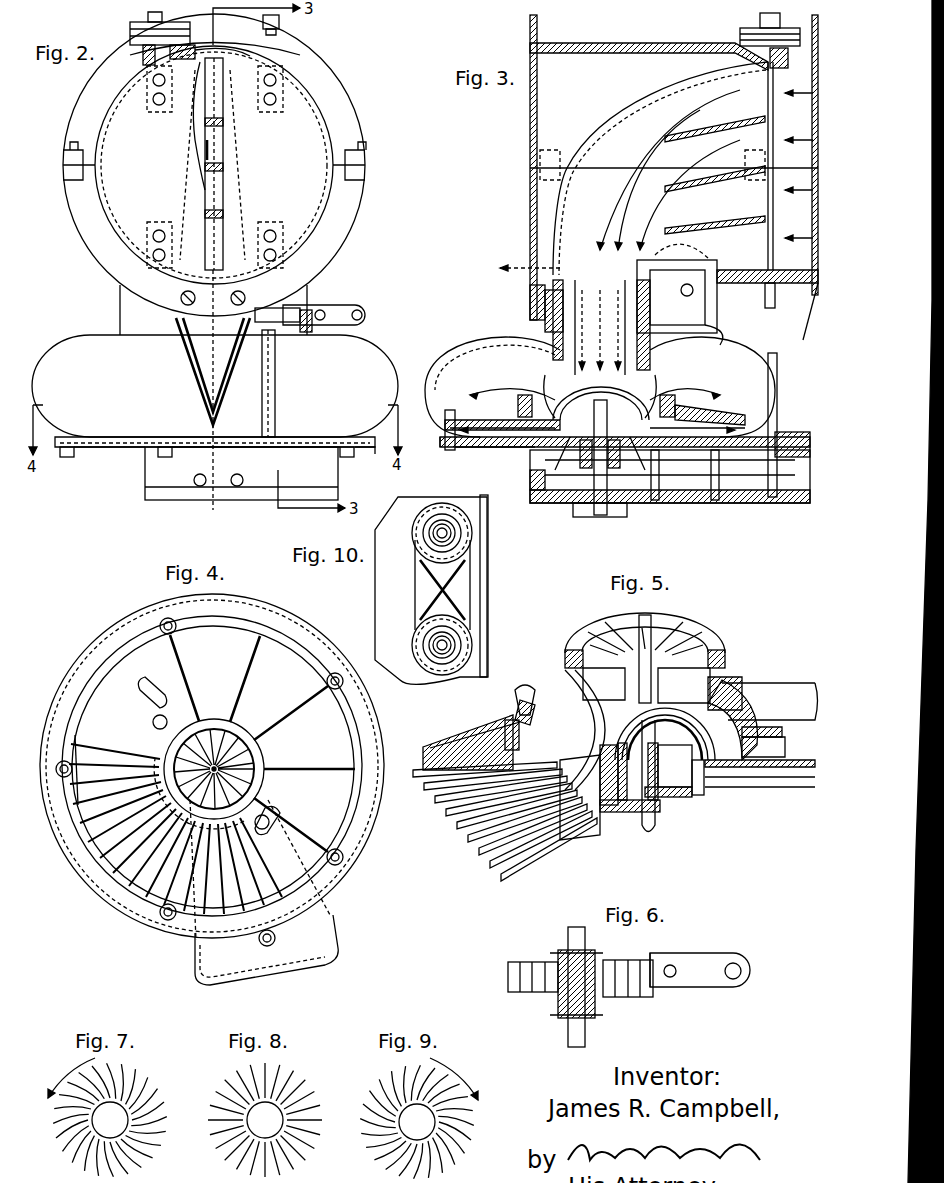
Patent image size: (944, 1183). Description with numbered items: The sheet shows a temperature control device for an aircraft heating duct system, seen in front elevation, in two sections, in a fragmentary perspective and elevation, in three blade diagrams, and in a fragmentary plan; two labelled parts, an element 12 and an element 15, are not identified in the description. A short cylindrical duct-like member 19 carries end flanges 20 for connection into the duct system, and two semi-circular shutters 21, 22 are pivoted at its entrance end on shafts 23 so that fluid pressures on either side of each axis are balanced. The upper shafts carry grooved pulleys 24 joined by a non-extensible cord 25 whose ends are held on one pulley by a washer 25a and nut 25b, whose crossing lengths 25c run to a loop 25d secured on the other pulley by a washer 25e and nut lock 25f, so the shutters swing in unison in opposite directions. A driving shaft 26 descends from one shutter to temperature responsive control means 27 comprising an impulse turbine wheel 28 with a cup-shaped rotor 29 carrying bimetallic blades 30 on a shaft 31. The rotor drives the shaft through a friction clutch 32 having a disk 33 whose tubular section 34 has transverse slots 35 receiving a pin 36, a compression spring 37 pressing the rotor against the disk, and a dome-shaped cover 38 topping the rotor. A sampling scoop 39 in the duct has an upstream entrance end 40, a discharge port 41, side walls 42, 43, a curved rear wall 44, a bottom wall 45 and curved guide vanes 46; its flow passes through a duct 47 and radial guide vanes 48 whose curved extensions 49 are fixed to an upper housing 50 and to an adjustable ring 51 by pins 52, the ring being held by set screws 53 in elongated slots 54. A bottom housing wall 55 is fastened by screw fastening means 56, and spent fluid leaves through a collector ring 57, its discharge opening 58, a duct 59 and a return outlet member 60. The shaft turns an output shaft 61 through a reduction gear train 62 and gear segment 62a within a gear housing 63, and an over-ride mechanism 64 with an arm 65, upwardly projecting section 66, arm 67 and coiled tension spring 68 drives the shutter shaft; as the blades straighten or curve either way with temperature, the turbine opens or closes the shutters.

In FIG. 5, the drive shaft 12 is at (750, 775).
In FIG. 2, the housing 15 is at (357, 112).
In FIG. 3, the housing 15 is at (527, 130).
In FIG. 3, the duct-like member 19 is at (621, 44).
In FIG. 10, the duct-like member 19 is at (380, 590).
In FIG. 2, the flanges 20 is at (366, 160).
In FIG. 3, the flanges 20 is at (532, 306).
In FIG. 10, the flanges 20 is at (490, 668).
In FIG. 2, the shutter 21 is at (110, 195).
In FIG. 2, the shutter 22 is at (312, 113).
In FIG. 3, the shutter 22 is at (775, 132).
In FIG. 2, the shafts 23 is at (142, 62).
In FIG. 3, the shafts 23 is at (788, 64).
In FIG. 2, the pulleys 24 is at (132, 42).
In FIG. 3, the pulleys 24 is at (740, 38).
In FIG. 10, the pulleys 24 is at (470, 556).
In FIG. 2, the non-extensible cord 25 is at (214, 29).
In FIG. 10, the washer 25a is at (437, 667).
In FIG. 10, the nut 25b is at (423, 650).
In FIG. 10, the cord lengths 25c is at (455, 610).
In FIG. 3, the loop 25d is at (745, 35).
In FIG. 10, the loop 25d is at (472, 540).
In FIG. 10, the washer 25e is at (423, 540).
In FIG. 10, the nut lock 25f is at (440, 520).
In FIG. 3, the driving shaft 26 is at (768, 296).
In FIG. 6, the driving shaft 26 is at (568, 935).
In FIG. 2, the temperature responsive control means 27 is at (128, 455).
In FIG. 3, the temperature responsive control means 27 is at (503, 452).
In FIG. 3, the impulse turbine wheel 28 is at (528, 452).
In FIG. 5, the impulse turbine wheel 28 is at (592, 835).
In FIG. 3, the rotor 29 is at (672, 450).
In FIG. 4, the rotor 29 is at (140, 755).
In FIG. 5, the rotor 29 is at (660, 720).
In FIG. 3, the impulse blades 30 is at (730, 412).
In FIG. 4, the impulse blades 30 is at (135, 885).
In FIG. 5, the impulse blades 30 is at (496, 870).
In FIG. 7, the impulse blades 30 is at (65, 1135).
In FIG. 8, the impulse blades 30 is at (215, 1135).
In FIG. 9, the impulse blades 30 is at (370, 1140).
In FIG. 3, the shaft 31 is at (595, 465).
In FIG. 5, the shaft 31 is at (646, 835).
In FIG. 5, the friction clutch 32 is at (660, 810).
In FIG. 3, the disk 33 is at (580, 455).
In FIG. 5, the disk 33 is at (698, 797).
In FIG. 3, the tubular section 34 is at (535, 485).
In FIG. 5, the tubular section 34 is at (672, 755).
In FIG. 5, the transverse slots 35 is at (682, 716).
In FIG. 3, the pin 36 is at (590, 400).
In FIG. 5, the pin 36 is at (630, 735).
In FIG. 3, the compression spring 37 is at (622, 455).
In FIG. 5, the compression spring 37 is at (608, 755).
In FIG. 3, the dome-shaped cover 38 is at (660, 406).
In FIG. 5, the dome-shaped cover 38 is at (655, 700).
In FIG. 7, the dome-shaped cover 38 is at (125, 1112).
In FIG. 8, the dome-shaped cover 38 is at (277, 1102).
In FIG. 9, the dome-shaped cover 38 is at (437, 1122).
In FIG. 2, the sampling scoop 39 is at (240, 182).
In FIG. 3, the sampling scoop 39 is at (606, 116).
In FIG. 2, the entrance end 40 is at (205, 105).
In FIG. 3, the entrance end 40 is at (770, 160).
In FIG. 3, the discharge port 41 is at (562, 268).
In FIG. 2, the side wall 42 is at (205, 148).
In FIG. 2, the side wall 43 is at (223, 85).
In FIG. 3, the curved rear wall 44 is at (588, 153).
In FIG. 3, the bottom wall 45 is at (702, 255).
In FIG. 2, the curved guide vanes 46 is at (210, 168).
In FIG. 3, the curved guide vanes 46 is at (705, 218).
In FIG. 3, the duct 47 is at (553, 313).
In FIG. 3, the guide vanes 48 is at (578, 345).
In FIG. 4, the guide vanes 48 is at (238, 742).
In FIG. 5, the guide vanes 48 is at (686, 640).
In FIG. 3, the curved extensions 49 is at (541, 396).
In FIG. 5, the curved extensions 49 is at (562, 690).
In FIG. 3, the upper housing 50 is at (525, 412).
In FIG. 4, the upper housing 50 is at (130, 652).
In FIG. 5, the upper housing 50 is at (455, 748).
In FIG. 3, the adjustable ring 51 is at (722, 405).
In FIG. 5, the adjustable ring 51 is at (500, 745).
In FIG. 3, the pin 52 is at (690, 414).
In FIG. 5, the pin 52 is at (506, 722).
In FIG. 3, the set screws 53 is at (518, 400).
In FIG. 4, the set screws 53 is at (158, 720).
In FIG. 5, the set screws 53 is at (520, 702).
In FIG. 4, the elongated slots 54 is at (157, 707).
In FIG. 5, the elongated slots 54 is at (528, 690).
In FIG. 2, the bottom housing wall 55 is at (360, 452).
In FIG. 3, the bottom housing wall 55 is at (480, 452).
In FIG. 4, the bottom housing wall 55 is at (100, 885).
In FIG. 2, the screw fastening means 56 is at (66, 455).
In FIG. 3, the screw fastening means 56 is at (447, 442).
In FIG. 4, the screw fastening means 56 is at (166, 618).
In FIG. 2, the collector ring 57 is at (80, 343).
In FIG. 3, the collector ring 57 is at (452, 370).
In FIG. 4, the collector ring 57 is at (80, 650).
In FIG. 3, the discharge opening 58 is at (700, 340).
In FIG. 3, the duct 59 is at (718, 322).
In FIG. 2, the return outlet member 60 is at (146, 242).
In FIG. 3, the return outlet member 60 is at (700, 283).
In FIG. 2, the output shaft 61 is at (275, 395).
In FIG. 3, the output shaft 61 is at (779, 396).
In FIG. 4, the output shaft 61 is at (270, 948).
In FIG. 6, the output shaft 61 is at (568, 1033).
In FIG. 3, the reduction gear train 62 is at (690, 500).
In FIG. 3, the gear segment 62a is at (790, 446).
In FIG. 2, the gear housing 63 is at (148, 478).
In FIG. 3, the gear housing 63 is at (790, 480).
In FIG. 4, the gear housing 63 is at (333, 940).
In FIG. 2, the over-ride mechanism 64 is at (340, 305).
In FIG. 6, the over-ride mechanism 64 is at (683, 945).
In FIG. 2, the arm 65 is at (311, 332).
In FIG. 6, the arm 65 is at (630, 998).
In FIG. 2, the upwardly projecting section 66 is at (320, 325).
In FIG. 6, the upwardly projecting section 66 is at (668, 990).
In FIG. 2, the arm 67 is at (345, 313).
In FIG. 6, the arm 67 is at (727, 957).
In FIG. 2, the coiled tension spring 68 is at (288, 322).
In FIG. 6, the coiled tension spring 68 is at (508, 976).